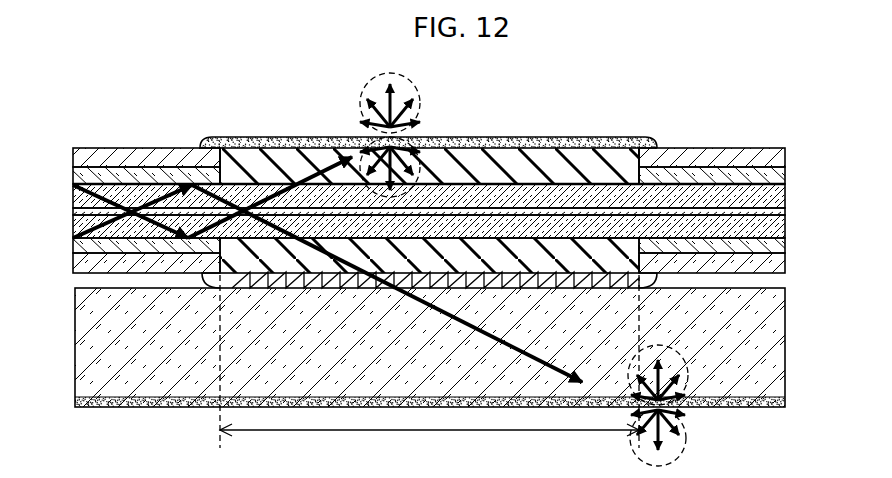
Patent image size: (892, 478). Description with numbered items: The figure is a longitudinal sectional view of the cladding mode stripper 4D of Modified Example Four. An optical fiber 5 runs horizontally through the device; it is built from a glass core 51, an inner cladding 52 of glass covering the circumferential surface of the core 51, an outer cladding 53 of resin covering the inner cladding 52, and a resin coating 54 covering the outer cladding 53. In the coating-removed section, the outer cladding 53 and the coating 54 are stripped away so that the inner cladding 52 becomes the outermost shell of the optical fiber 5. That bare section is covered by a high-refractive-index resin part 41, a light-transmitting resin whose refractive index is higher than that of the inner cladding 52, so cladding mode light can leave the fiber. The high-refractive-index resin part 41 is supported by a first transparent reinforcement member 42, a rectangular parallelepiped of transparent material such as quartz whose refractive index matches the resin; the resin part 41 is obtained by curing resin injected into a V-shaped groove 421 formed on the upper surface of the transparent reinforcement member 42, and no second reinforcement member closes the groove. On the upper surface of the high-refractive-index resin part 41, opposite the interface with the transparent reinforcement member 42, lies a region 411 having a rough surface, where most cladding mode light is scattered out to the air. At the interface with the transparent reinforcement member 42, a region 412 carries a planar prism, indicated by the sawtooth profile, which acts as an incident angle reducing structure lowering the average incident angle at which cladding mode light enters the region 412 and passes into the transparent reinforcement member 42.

The cladding mode stripper 4D is at (811, 122).
The optical fiber 5 is at (787, 212).
The core 51 is at (628, 193).
The inner cladding 52 is at (670, 181).
The outer cladding 53 is at (715, 168).
The coating 54 is at (757, 152).
The high-refractive-index resin part 41 is at (573, 137).
The region 411 is at (510, 147).
The region 412 is at (465, 270).
The transparent reinforcement member 42 is at (787, 357).
The V-shaped groove 421 is at (89, 409).